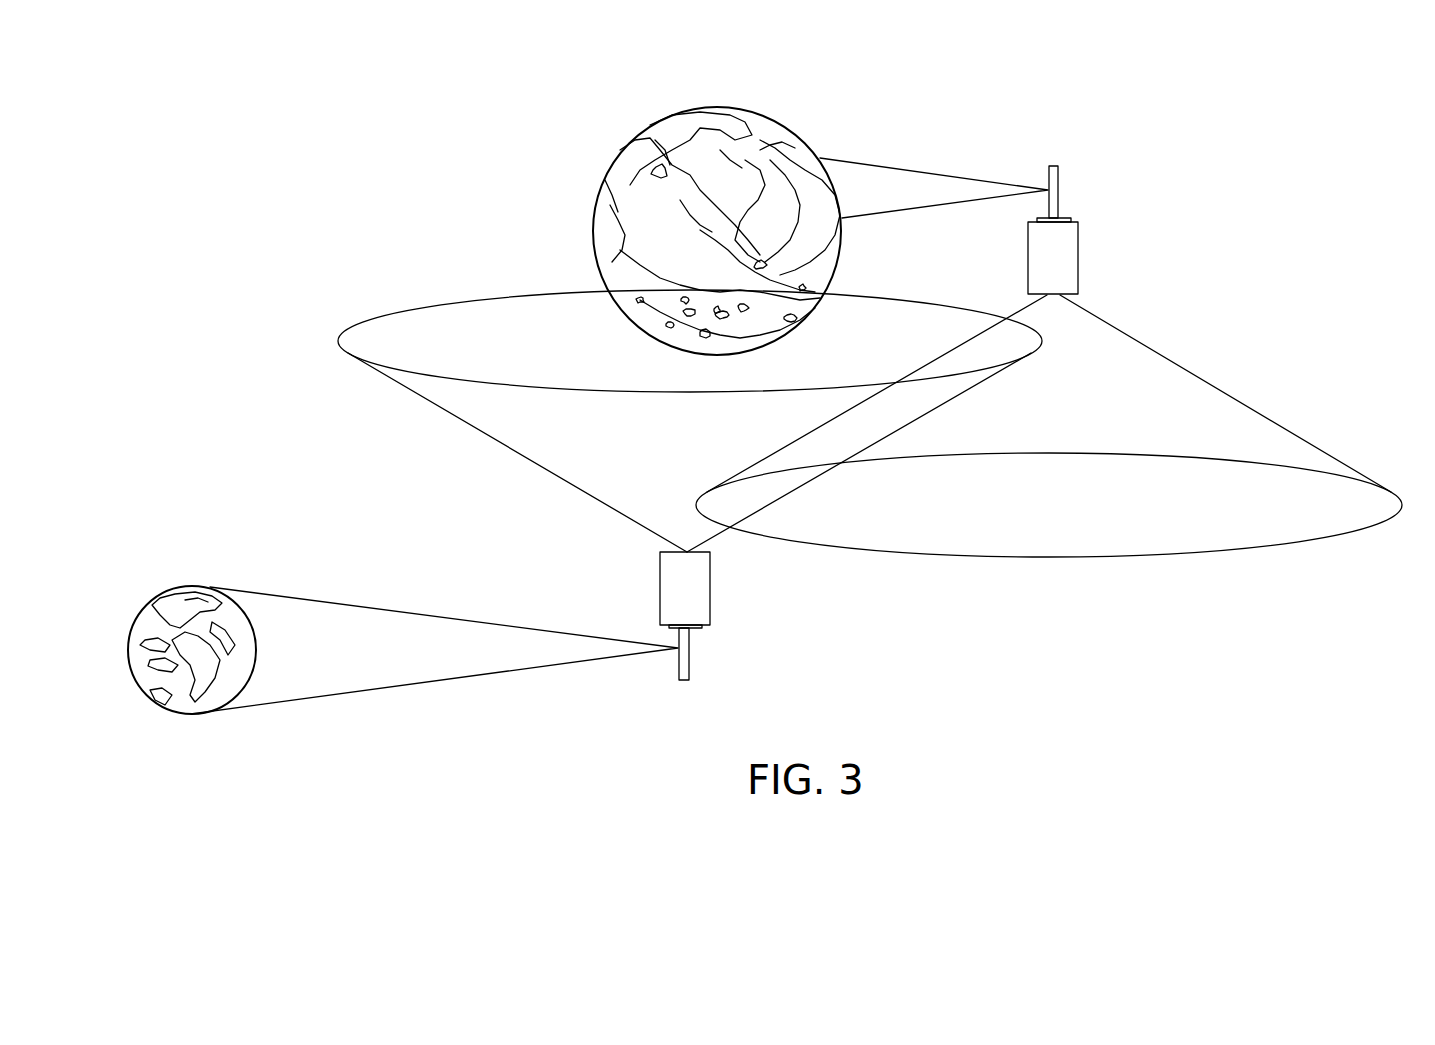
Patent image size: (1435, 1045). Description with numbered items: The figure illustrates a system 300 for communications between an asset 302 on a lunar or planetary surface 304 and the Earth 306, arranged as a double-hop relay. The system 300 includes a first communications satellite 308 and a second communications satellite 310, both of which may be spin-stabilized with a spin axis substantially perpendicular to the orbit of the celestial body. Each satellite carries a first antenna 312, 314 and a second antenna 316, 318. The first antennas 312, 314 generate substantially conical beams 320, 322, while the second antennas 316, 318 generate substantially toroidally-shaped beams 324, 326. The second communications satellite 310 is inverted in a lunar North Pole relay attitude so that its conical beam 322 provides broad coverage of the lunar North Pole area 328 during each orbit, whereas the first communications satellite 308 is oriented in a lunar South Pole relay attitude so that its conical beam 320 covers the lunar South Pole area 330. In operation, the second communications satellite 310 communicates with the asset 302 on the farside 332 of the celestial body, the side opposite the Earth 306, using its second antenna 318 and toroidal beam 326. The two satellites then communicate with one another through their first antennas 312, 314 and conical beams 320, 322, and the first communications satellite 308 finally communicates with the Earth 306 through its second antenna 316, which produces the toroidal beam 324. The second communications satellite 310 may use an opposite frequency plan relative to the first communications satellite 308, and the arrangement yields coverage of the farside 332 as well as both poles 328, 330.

The system 300 is at (1037, 595).
The asset 302 is at (832, 192).
The lunar or planetary surface 304 is at (797, 126).
The Earth 306 is at (181, 586).
The first communications satellite 308 is at (710, 590).
The second communications satellite 310 is at (1079, 250).
The first antenna 312 is at (660, 552).
The first antenna 314 is at (1077, 298).
The second antenna 316 is at (690, 660).
The second antenna 318 is at (1060, 192).
The conical beam 320 is at (488, 436).
The conical beam 322 is at (1200, 380).
The toroidal beam 324 is at (383, 692).
The toroidal beam 326 is at (969, 178).
The lunar North Pole area 328 is at (698, 108).
The lunar South Pole area 330 is at (716, 358).
The farside 332 is at (840, 255).